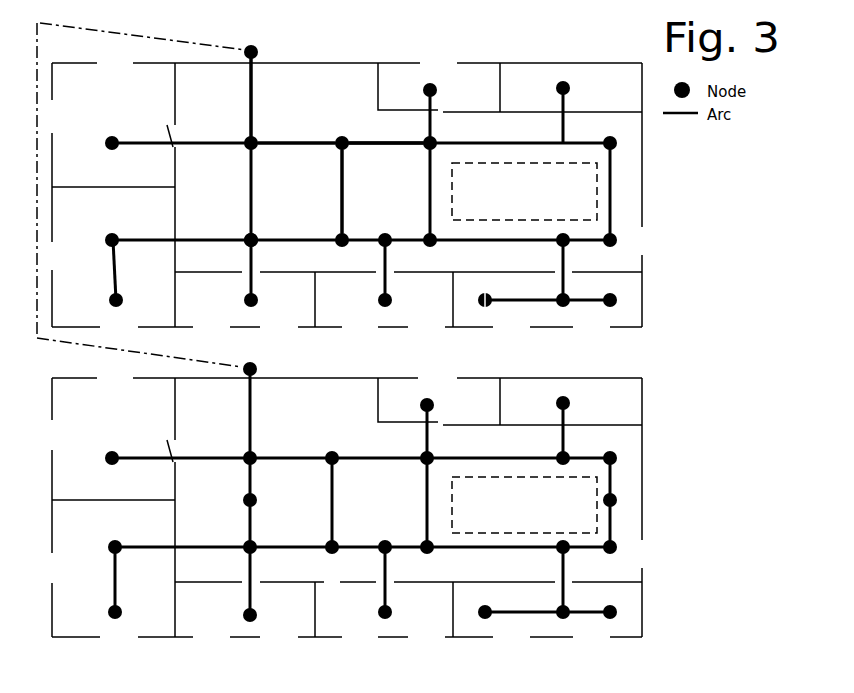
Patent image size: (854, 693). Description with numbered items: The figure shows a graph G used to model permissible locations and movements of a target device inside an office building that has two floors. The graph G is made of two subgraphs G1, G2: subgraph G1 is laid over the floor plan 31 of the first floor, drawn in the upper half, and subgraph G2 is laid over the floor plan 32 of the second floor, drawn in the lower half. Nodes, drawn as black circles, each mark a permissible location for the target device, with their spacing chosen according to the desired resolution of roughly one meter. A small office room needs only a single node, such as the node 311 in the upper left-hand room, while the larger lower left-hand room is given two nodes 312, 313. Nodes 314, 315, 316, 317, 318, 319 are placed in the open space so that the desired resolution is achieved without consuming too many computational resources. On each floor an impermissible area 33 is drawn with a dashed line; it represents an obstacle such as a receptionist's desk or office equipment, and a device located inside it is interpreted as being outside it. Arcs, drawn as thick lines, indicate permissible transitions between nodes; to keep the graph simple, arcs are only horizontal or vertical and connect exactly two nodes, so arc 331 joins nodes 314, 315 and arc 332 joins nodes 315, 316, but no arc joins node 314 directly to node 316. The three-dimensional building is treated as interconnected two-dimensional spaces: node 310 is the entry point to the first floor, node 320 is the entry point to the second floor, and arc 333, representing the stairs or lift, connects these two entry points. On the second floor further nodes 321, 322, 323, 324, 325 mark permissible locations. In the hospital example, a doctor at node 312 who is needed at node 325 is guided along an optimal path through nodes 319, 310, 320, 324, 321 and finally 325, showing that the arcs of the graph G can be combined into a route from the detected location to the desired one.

The floor plan of the first floor 31 is at (642, 197).
The floor plan of the second floor 32 is at (642, 508).
The impermissible area 33 is at (533, 200).
The graph G is at (697, 333).
The subgraph G1 is at (376, 181).
The subgraph G2 is at (397, 477).
The node 310 is at (258, 50).
The node 311 is at (107, 139).
The node 312 is at (109, 235).
The node 313 is at (112, 299).
The node 314 is at (245, 140).
The node 315 is at (337, 139).
The node 316 is at (415, 152).
The node 317 is at (338, 185).
The node 318 is at (336, 237).
The node 319 is at (245, 237).
The node 320 is at (258, 365).
The node 321 is at (557, 456).
The node 322 is at (616, 456).
The node 323 is at (616, 491).
The node 324 is at (245, 454).
The node 325 is at (556, 404).
The arc 331 is at (295, 141).
The arc 332 is at (368, 141).
The arc 333 is at (249, 48).